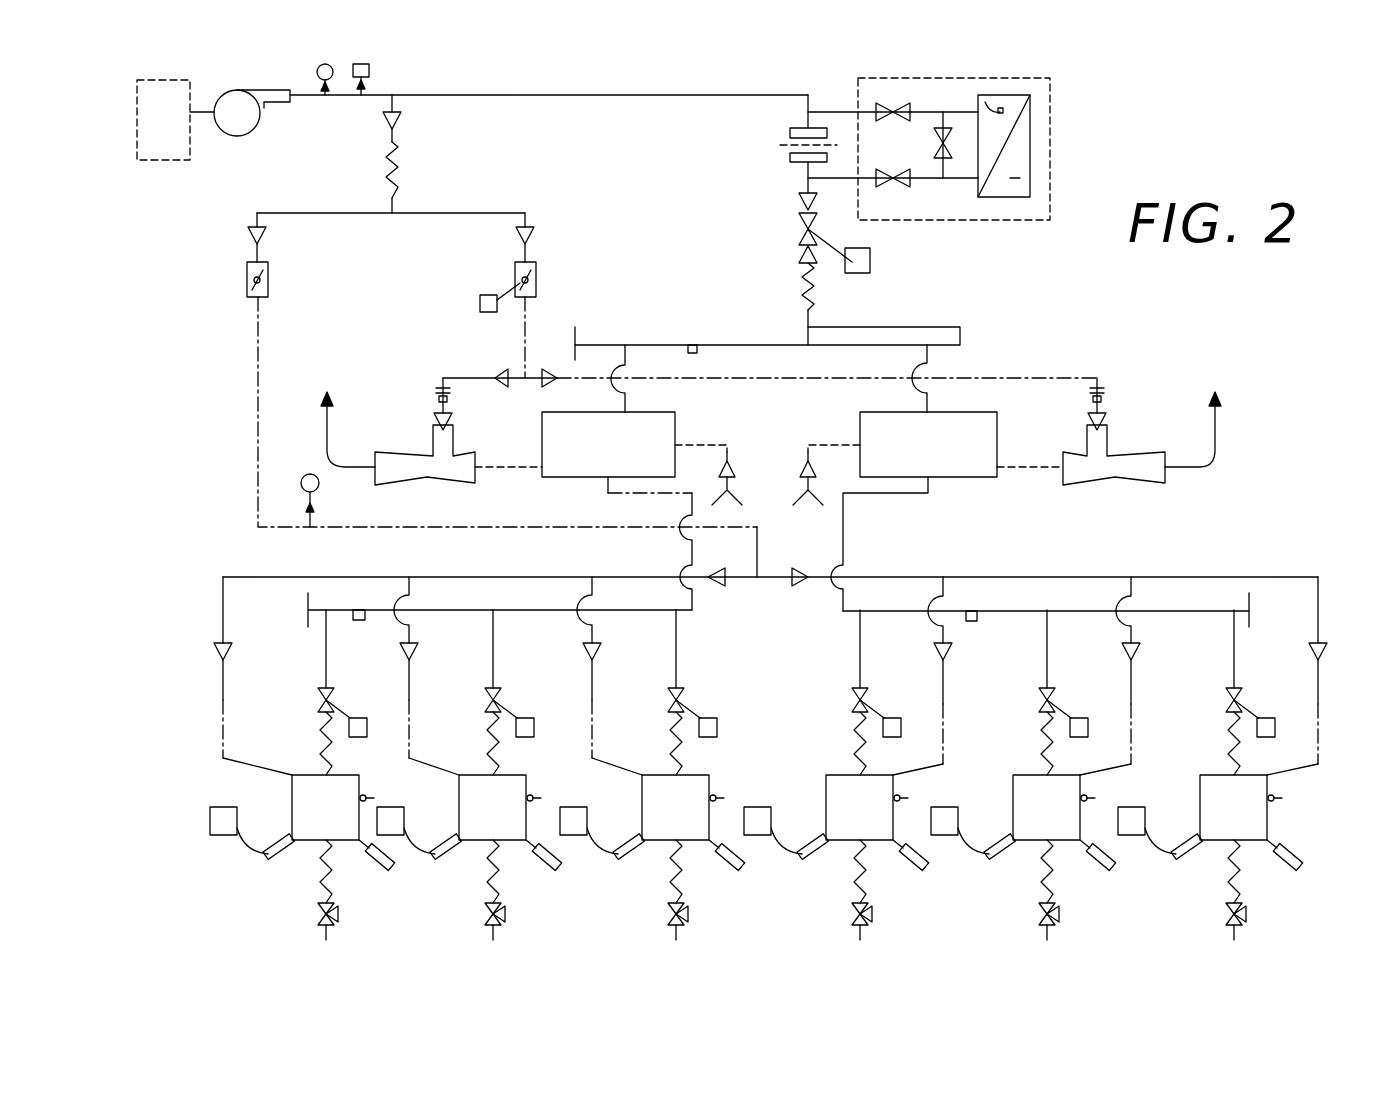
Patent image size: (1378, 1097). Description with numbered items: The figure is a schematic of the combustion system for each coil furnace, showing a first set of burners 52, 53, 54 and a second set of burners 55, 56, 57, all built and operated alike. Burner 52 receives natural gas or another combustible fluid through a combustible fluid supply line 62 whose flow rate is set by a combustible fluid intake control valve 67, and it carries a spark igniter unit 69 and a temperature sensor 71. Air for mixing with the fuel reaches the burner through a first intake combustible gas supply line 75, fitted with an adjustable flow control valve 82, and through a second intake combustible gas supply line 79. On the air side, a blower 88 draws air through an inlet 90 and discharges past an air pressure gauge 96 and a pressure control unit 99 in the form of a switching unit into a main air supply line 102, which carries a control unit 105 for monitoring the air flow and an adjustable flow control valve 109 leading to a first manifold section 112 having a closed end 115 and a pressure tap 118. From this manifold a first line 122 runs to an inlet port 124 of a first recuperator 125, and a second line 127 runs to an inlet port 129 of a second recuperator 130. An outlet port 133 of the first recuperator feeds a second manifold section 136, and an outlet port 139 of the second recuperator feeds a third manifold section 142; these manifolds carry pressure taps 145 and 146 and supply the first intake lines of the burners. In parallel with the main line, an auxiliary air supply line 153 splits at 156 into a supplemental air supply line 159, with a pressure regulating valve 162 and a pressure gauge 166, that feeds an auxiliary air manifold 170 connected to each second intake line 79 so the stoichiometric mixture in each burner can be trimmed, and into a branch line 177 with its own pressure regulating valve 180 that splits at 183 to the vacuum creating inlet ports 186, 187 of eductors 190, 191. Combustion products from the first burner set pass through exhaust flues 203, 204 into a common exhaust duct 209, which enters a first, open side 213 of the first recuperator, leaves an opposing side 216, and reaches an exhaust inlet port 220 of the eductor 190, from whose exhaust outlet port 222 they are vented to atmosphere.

The burner 52 is at (306, 780).
The burner 53 is at (462, 786).
The burner 54 is at (645, 790).
The burner 55 is at (830, 780).
The burner 56 is at (1013, 793).
The burner 57 is at (1200, 793).
The combustible fluid supply line 62 is at (322, 936).
The combustible fluid intake control valve 67 is at (310, 912).
The spark igniter unit 69 is at (262, 858).
The temperature sensor 71 is at (392, 868).
The first intake combustible gas supply line 75 is at (330, 660).
The second intake combustible gas supply line 79 is at (218, 678).
The adjustable flow control valve 82 is at (340, 698).
The blower 88 is at (243, 120).
The inlet 90 is at (172, 162).
The air pressure gauge 96 is at (316, 69).
The pressure control unit 99 is at (372, 70).
The main air supply line 102 is at (618, 97).
The control unit 105 is at (1058, 130).
The adjustable flow control valve 109 is at (840, 228).
The first manifold section 112 is at (713, 343).
The closed end 115 is at (585, 343).
The pressure tap 118 is at (700, 352).
The first line 122 is at (628, 345).
The inlet port 124 is at (628, 408).
The first recuperator 125 is at (608, 444).
The supply line 127 is at (932, 358).
The inlet port 129 is at (933, 408).
The second recuperator 130 is at (928, 444).
The outlet port 133 is at (605, 485).
The second manifold section 136 is at (505, 612).
The outlet port 139 is at (935, 490).
The third manifold section 142 is at (1155, 615).
The pressure tap 145 is at (360, 608).
The pressure tap 146 is at (972, 608).
The auxiliary air supply line 153 is at (398, 136).
The splitting point 156 is at (408, 212).
The supplemental air supply line 159 is at (265, 248).
The pressure regulating valve 162 is at (278, 285).
The pressure gauge 166 is at (320, 490).
The auxiliary air manifold 170 is at (733, 590).
The branch line 177 is at (532, 247).
The pressure regulating valve 180 is at (545, 273).
The split point 183 is at (520, 372).
The vacuum creating inlet port 186 is at (452, 425).
The vacuum creating inlet port 187 is at (1107, 425).
The eductor 190 is at (422, 472).
The eductor 191 is at (1118, 472).
The exhaust flue 203 is at (722, 490).
The exhaust flue 204 is at (733, 470).
The common exhaust duct 209 is at (728, 453).
The first, open side 213 is at (680, 444).
The opposing side 216 is at (540, 465).
The exhaust inlet port 220 is at (478, 470).
The exhaust outlet port 222 is at (345, 448).